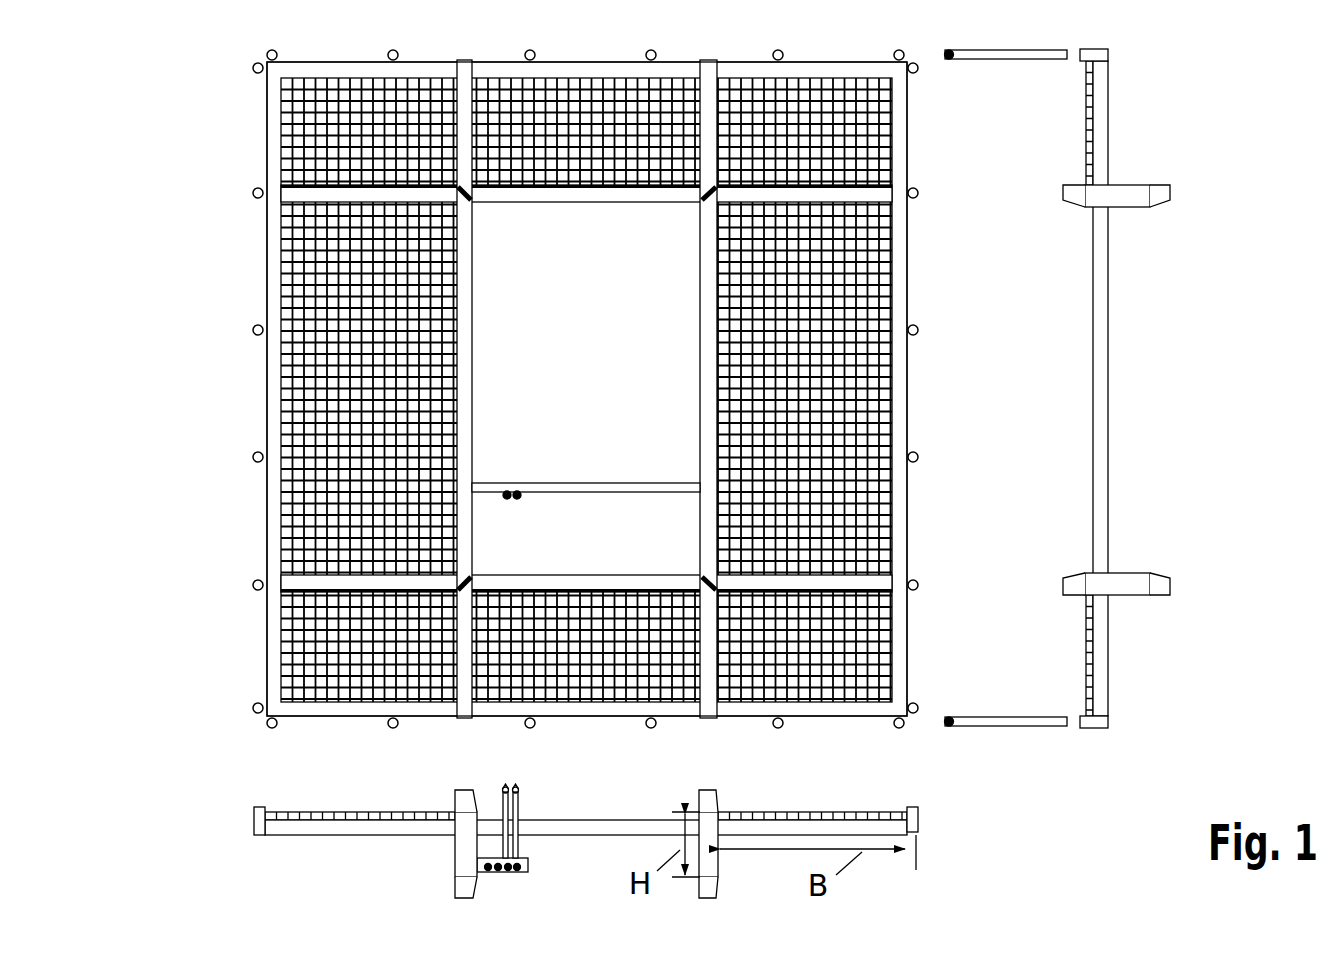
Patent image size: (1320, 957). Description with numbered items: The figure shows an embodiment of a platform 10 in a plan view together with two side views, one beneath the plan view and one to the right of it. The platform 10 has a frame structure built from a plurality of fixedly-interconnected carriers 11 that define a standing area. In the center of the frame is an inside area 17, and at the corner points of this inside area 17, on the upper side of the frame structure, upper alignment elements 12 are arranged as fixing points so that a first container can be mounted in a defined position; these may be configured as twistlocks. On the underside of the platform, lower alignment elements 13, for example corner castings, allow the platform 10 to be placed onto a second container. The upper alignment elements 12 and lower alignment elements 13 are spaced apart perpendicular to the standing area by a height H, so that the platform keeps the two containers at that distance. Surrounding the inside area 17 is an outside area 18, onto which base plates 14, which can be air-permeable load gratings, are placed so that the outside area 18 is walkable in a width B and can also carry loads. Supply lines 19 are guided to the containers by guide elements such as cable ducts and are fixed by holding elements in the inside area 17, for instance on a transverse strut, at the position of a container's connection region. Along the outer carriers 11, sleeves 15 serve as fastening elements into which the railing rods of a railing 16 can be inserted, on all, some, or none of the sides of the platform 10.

The platform 10 is at (205, 183).
The carrier 11 is at (473, 410).
The upper alignment element 12 is at (722, 797).
The lower alignment element 13 is at (475, 203).
The base plate 14 is at (303, 502).
The sleeve 15 is at (647, 48).
The railing 16 is at (1003, 48).
The inside area 17 is at (522, 305).
The outside area 18 is at (313, 420).
The supply line 19 is at (517, 492).